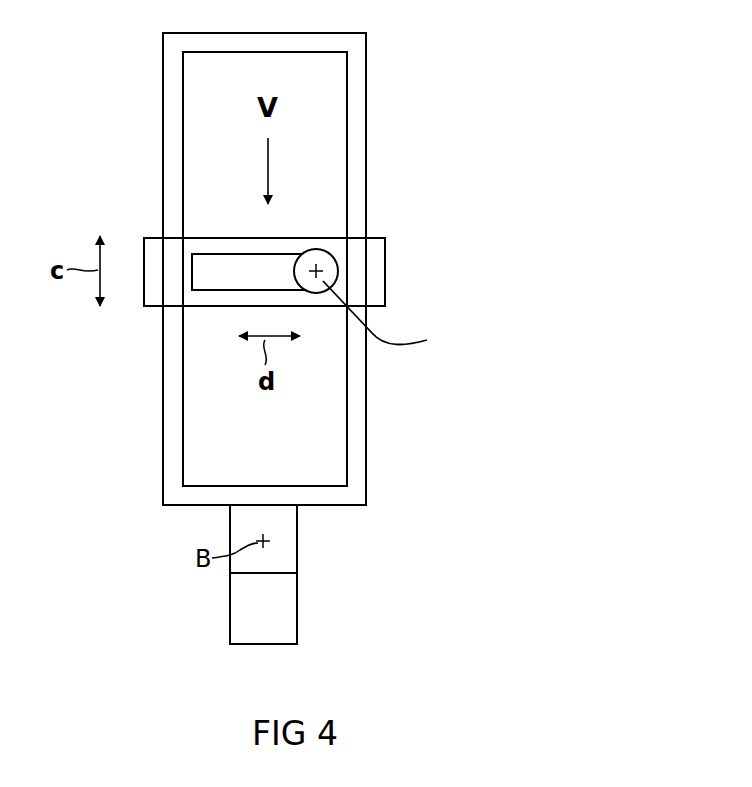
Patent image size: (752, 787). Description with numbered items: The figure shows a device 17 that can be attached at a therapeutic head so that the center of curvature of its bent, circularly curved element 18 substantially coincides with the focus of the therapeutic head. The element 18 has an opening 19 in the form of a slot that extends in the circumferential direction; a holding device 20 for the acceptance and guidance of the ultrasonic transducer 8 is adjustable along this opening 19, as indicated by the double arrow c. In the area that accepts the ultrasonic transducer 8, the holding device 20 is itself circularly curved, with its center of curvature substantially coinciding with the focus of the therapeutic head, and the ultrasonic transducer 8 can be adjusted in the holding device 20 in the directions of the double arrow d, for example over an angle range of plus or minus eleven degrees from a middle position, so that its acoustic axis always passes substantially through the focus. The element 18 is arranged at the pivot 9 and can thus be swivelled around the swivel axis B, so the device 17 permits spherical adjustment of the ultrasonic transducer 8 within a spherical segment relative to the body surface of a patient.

The ultrasonic transducer 8 is at (330, 269).
The pivot 9 is at (287, 543).
The device 17 is at (384, 164).
The bent, circularly curved element 18 is at (357, 402).
The opening 19 is at (297, 440).
The holding device 20 is at (372, 290).